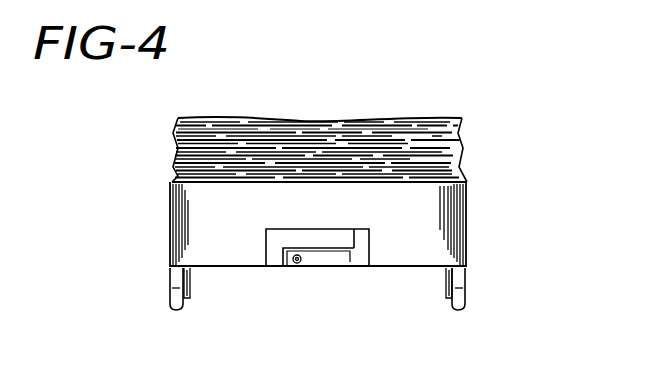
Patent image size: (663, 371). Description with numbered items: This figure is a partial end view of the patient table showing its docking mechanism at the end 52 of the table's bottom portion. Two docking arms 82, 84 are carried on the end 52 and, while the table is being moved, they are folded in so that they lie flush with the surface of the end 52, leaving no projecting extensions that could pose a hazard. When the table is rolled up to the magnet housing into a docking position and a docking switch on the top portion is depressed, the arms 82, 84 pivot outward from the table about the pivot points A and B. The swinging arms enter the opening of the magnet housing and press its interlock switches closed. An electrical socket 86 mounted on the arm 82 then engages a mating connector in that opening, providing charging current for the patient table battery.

The end 52 is at (459, 240).
The docking arm 82 is at (364, 249).
The docking arm 84 is at (273, 230).
The electrical socket 86 is at (297, 266).
The pivot point A is at (266, 269).
The pivot point B is at (370, 269).